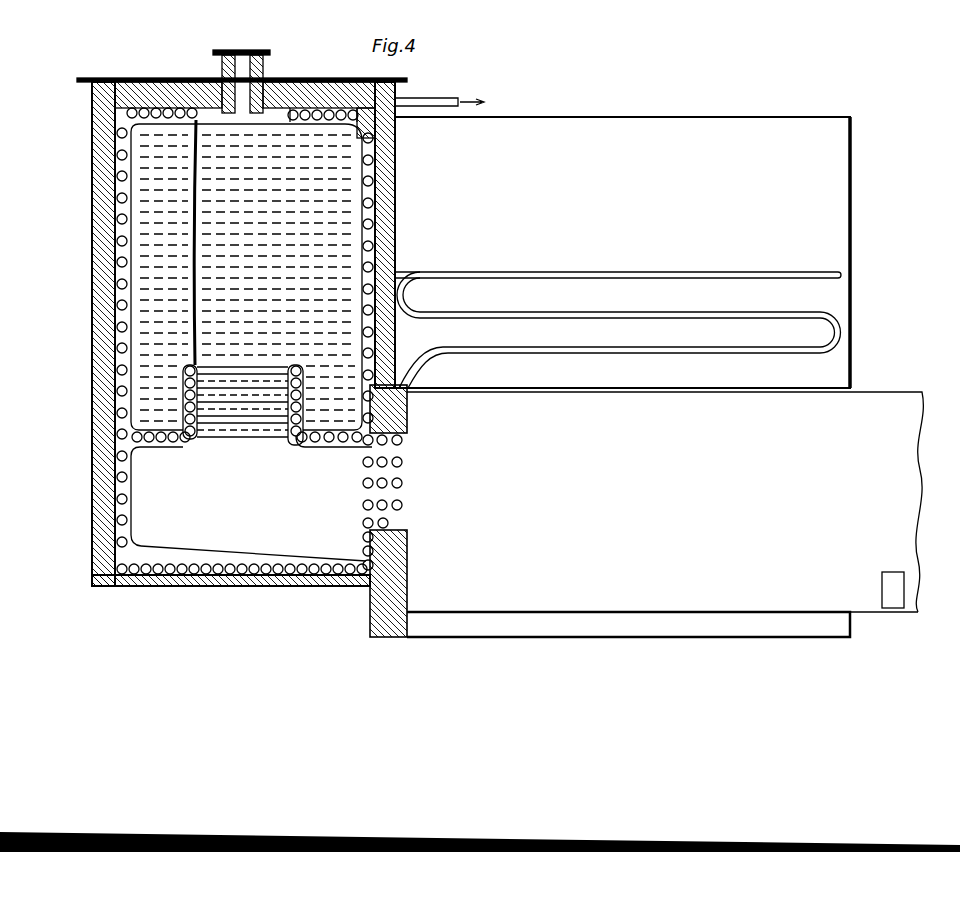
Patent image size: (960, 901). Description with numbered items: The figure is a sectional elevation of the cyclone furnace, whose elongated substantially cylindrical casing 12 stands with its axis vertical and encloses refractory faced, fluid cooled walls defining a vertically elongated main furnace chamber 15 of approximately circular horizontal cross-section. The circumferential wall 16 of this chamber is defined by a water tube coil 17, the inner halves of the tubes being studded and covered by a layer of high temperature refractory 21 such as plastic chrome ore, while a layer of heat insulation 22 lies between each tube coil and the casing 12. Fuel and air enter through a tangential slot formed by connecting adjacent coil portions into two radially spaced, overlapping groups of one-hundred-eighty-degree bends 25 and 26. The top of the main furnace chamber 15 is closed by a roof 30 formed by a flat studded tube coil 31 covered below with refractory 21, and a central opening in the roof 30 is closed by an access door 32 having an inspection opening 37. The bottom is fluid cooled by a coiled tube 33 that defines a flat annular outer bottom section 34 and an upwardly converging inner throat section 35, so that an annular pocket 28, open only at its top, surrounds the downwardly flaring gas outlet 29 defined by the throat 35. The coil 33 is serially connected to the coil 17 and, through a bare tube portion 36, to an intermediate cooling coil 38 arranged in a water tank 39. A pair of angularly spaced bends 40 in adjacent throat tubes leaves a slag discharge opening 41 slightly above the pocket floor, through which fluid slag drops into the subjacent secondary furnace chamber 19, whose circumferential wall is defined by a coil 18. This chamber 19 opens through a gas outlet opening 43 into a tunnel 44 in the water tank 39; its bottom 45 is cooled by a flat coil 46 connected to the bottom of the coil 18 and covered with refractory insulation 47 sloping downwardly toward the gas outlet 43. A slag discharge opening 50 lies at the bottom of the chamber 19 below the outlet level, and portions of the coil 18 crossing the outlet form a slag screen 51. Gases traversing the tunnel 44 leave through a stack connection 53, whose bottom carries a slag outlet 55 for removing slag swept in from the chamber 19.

The casing 12 is at (93, 287).
The main furnace chamber 15 is at (262, 269).
The circumferential wall 16 is at (393, 246).
The water tube coil 17 is at (120, 350).
The coil 18 is at (127, 497).
The secondary furnace chamber 19 is at (244, 508).
The high temperature refractory 21 is at (118, 190).
The heat insulation 22 is at (97, 210).
The 180° bends 25 is at (208, 150).
The 180° bends 26 is at (92, 264).
The annular pocket 28 is at (359, 393).
The gas outlet 29 is at (240, 392).
The roof 30 is at (163, 96).
The flat studded tube coil 31 is at (301, 110).
The access door 32 is at (284, 78).
The coiled tube 33 is at (188, 440).
The flat annular outer bottom section 34 is at (153, 442).
The throat section 35 is at (301, 372).
The bare tube portion 36 is at (320, 449).
The inspection opening 37 is at (243, 56).
The intermediate cooling coil 38 is at (620, 272).
The water tank 39 is at (852, 322).
The 180° bends 40 is at (197, 420).
The slag discharge opening 41 is at (187, 420).
The gas outlet opening 43 is at (424, 480).
The tunnel 44 is at (634, 510).
The bottom 45 is at (268, 588).
The flat coil 46 is at (192, 576).
The refractory insulation 47 is at (225, 556).
The slag discharge opening 50 is at (345, 558).
The slag screen 51 is at (401, 485).
The stack connection 53 is at (890, 403).
The slag outlet 55 is at (895, 587).